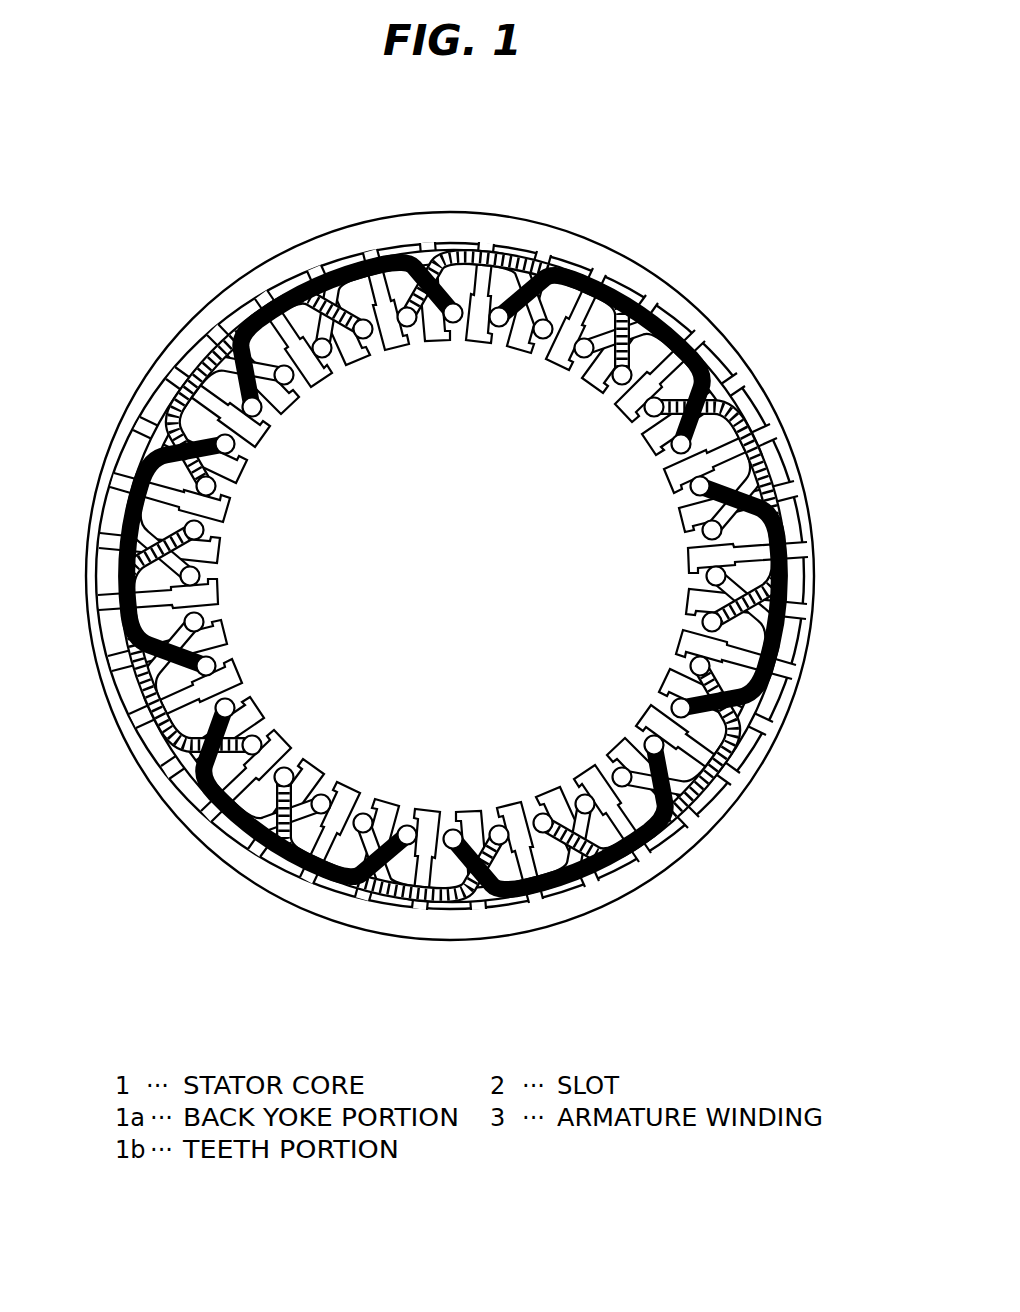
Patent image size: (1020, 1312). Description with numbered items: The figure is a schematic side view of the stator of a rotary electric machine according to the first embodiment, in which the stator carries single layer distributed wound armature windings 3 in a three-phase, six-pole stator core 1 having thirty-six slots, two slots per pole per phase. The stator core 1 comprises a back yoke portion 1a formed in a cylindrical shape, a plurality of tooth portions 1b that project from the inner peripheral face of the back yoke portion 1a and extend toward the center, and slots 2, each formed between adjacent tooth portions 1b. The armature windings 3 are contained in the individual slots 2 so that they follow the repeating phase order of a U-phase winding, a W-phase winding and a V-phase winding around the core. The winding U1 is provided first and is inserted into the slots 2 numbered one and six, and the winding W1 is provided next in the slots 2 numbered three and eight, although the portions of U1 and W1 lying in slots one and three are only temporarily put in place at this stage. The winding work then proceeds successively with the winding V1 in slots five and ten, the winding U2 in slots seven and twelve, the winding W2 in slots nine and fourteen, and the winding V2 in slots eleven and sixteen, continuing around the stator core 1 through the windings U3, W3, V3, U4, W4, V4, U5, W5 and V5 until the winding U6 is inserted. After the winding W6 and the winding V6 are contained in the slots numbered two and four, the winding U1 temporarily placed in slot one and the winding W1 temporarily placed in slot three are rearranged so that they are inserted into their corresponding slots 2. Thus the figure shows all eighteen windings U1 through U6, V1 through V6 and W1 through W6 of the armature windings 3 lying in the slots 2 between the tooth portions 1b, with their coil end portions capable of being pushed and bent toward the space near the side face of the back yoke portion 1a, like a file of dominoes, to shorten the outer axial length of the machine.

The stator core 1 is at (472, 213).
The back yoke portion 1a is at (580, 242).
The tooth portions 1b is at (391, 340).
The slots 2 is at (335, 370).
The armature windings 3 is at (466, 570).
The winding U1 is at (409, 246).
The winding U2 is at (150, 422).
The winding U3 is at (170, 776).
The winding U4 is at (475, 912).
The winding U5 is at (766, 722).
The winding U6 is at (728, 348).
The winding V1 is at (213, 336).
The winding V2 is at (128, 682).
The winding V3 is at (369, 904).
The winding V4 is at (689, 832).
The winding V5 is at (770, 458).
The winding V6 is at (532, 243).
The winding W1 is at (303, 268).
The winding W2 is at (116, 528).
The winding W3 is at (252, 870).
The winding W4 is at (590, 896).
The winding W5 is at (785, 596).
The winding W6 is at (623, 272).